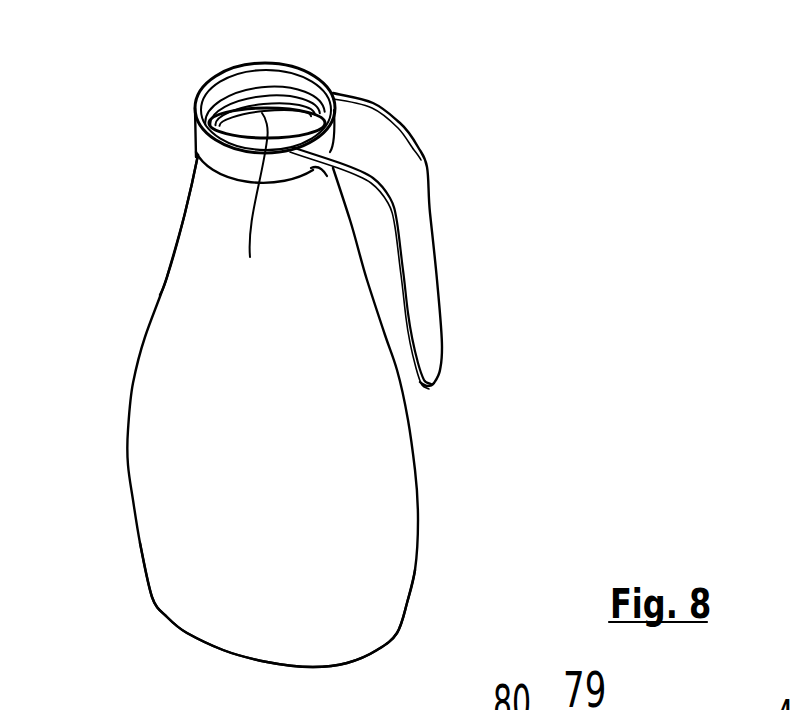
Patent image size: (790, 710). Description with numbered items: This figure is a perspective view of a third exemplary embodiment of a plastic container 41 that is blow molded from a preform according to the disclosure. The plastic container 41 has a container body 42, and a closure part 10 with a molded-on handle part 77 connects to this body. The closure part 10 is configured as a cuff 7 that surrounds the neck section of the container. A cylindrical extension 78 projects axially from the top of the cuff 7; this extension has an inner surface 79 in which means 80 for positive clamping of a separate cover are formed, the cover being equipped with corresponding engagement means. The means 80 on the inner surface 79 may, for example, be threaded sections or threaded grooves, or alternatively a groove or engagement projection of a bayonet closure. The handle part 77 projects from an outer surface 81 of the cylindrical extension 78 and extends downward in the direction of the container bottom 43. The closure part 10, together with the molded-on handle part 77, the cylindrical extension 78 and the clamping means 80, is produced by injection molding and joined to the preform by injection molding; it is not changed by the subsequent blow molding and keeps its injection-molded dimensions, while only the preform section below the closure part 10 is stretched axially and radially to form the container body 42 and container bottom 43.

The cuff 7 is at (254, 223).
The closure part 10 is at (430, 78).
The plastic container 41 is at (626, 238).
The container body 42 is at (142, 453).
The container bottom 43 is at (223, 650).
The handle part 77 is at (418, 217).
The cylindrical extension 78 is at (195, 120).
The inner surface 79 is at (307, 80).
The means for positive clamping 80 is at (238, 100).
The outer surface 81 is at (215, 167).